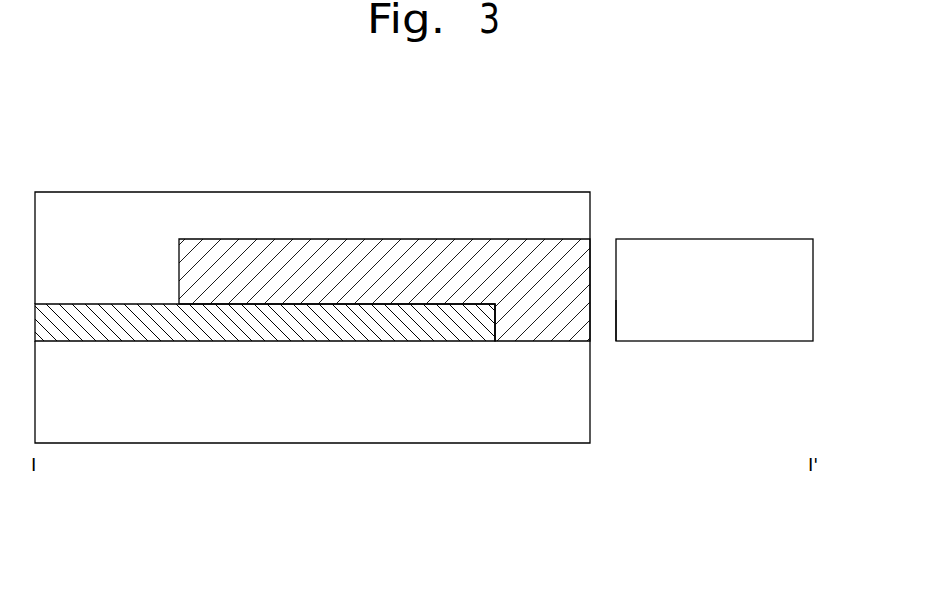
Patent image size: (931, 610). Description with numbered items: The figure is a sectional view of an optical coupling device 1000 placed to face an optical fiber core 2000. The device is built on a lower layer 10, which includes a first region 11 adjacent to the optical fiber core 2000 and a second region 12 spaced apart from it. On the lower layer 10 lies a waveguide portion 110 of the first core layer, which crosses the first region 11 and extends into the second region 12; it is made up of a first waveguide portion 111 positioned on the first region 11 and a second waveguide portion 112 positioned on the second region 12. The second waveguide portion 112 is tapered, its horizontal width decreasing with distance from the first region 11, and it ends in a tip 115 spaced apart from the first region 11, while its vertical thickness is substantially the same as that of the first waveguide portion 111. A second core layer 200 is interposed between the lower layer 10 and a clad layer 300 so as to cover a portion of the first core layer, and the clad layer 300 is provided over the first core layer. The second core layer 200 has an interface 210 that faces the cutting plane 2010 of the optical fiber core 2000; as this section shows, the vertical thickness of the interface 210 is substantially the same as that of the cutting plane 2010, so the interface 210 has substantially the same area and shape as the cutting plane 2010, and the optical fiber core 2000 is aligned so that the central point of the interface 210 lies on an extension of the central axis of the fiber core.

The lower layer 10 is at (590, 404).
The first region 11 is at (180, 480).
The second region 12 is at (590, 481).
The waveguide portion 110 is at (265, 368).
The first waveguide portion 111 is at (125, 330).
The second waveguide portion 112 is at (337, 349).
The tip 115 is at (499, 303).
The second core layer 200 is at (537, 341).
The interface 210 is at (592, 257).
The clad layer 300 is at (510, 192).
The optical coupling device 1000 is at (590, 531).
The optical fiber core 2000 is at (718, 239).
The cutting plane 2010 is at (616, 327).